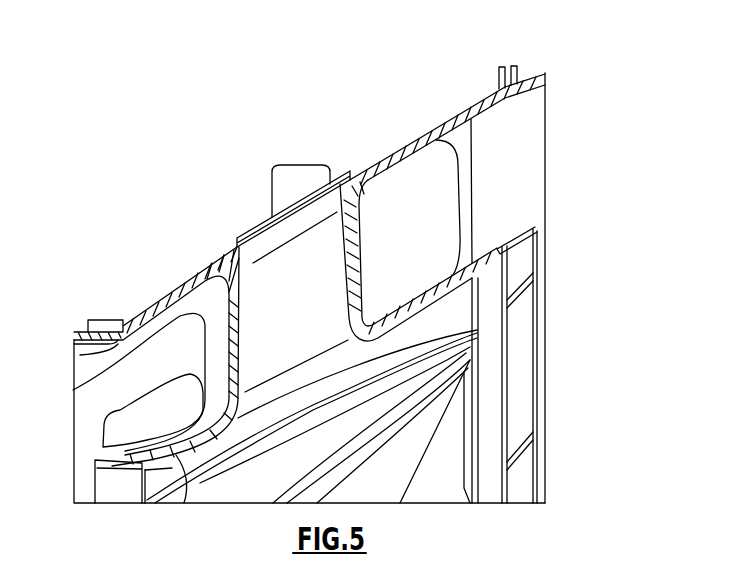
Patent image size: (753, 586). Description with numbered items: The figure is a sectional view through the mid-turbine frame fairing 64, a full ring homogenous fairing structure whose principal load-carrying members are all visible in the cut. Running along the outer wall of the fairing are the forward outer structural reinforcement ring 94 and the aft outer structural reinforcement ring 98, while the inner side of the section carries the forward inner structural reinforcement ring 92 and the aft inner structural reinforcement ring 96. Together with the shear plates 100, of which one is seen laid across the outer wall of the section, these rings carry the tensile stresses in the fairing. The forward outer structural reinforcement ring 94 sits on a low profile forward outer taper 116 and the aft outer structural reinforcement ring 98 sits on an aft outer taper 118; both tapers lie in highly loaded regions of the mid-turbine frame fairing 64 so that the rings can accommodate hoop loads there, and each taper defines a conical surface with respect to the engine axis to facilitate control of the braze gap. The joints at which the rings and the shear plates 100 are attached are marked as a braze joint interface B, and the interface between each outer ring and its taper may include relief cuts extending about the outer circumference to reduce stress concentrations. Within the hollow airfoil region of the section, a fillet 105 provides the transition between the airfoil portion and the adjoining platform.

The mid-turbine frame fairing 64 is at (419, 79).
The forward inner structural reinforcement ring 92 is at (122, 470).
The forward outer structural reinforcement ring 94 is at (99, 318).
The aft inner structural reinforcement ring 96 is at (488, 487).
The aft outer structural reinforcement ring 98 is at (511, 72).
The shear plate 100 is at (256, 230).
The fillet 105 is at (364, 325).
The forward outer taper 116 is at (80, 355).
The aft outer taper 118 is at (547, 103).
The braze joint interface B is at (527, 78).